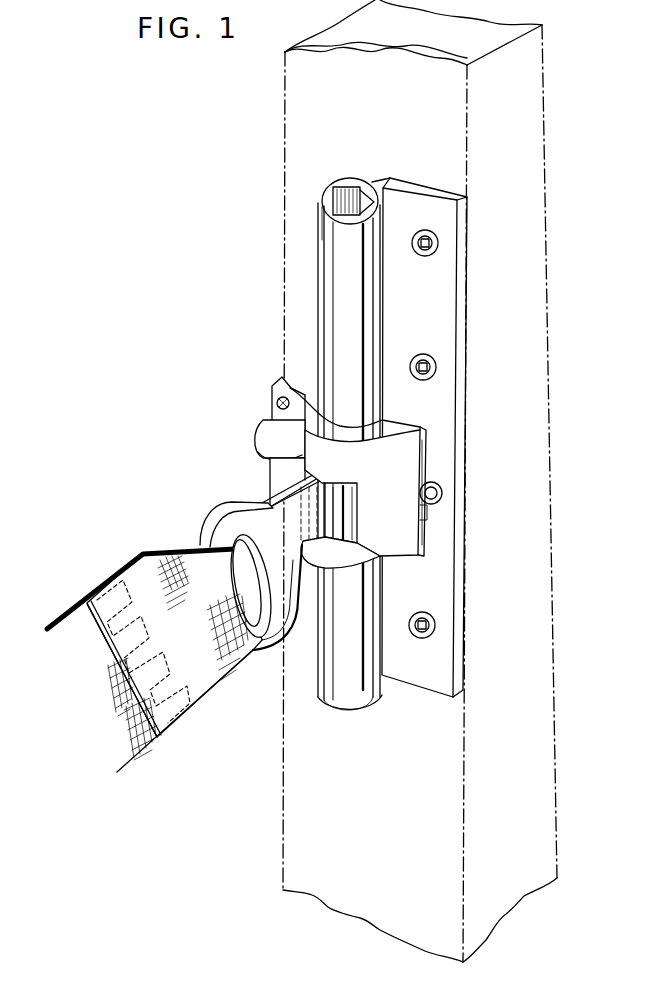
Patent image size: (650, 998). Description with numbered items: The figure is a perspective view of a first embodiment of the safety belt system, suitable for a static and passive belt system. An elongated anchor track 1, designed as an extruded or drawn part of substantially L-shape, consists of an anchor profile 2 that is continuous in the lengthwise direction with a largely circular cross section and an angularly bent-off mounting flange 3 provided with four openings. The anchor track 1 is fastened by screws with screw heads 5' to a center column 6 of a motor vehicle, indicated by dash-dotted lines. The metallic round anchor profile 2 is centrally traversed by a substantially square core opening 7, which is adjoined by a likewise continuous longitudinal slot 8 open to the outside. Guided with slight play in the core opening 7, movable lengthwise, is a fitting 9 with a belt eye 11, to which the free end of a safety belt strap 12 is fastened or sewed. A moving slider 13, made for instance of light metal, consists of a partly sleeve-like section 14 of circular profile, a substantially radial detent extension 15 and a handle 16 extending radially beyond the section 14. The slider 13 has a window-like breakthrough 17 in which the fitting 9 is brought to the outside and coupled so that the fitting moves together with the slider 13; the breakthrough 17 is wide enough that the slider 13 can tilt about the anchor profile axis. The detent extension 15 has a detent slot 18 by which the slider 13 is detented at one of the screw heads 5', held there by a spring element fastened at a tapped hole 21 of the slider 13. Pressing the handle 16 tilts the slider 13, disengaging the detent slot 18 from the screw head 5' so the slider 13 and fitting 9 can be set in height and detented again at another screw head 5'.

The anchor track 1 is at (408, 420).
The anchor profile 2 is at (322, 195).
The mounting flange 3 is at (437, 192).
The screw heads 5' is at (455, 434).
The center column 6 is at (542, 85).
The core opening 7 is at (362, 200).
The longitudinal slot 8 is at (322, 210).
The fitting 9 is at (287, 495).
The belt eye 11 is at (223, 517).
The safety belt strap 12 is at (147, 750).
The moving slider 13 is at (395, 562).
The sleeve-like section 14 is at (270, 462).
The detent extension 15 is at (396, 491).
The handle 16 is at (272, 437).
The window-like breakthrough 17 is at (390, 567).
The detent slot 18 is at (423, 517).
The tapped hole 21 is at (278, 383).